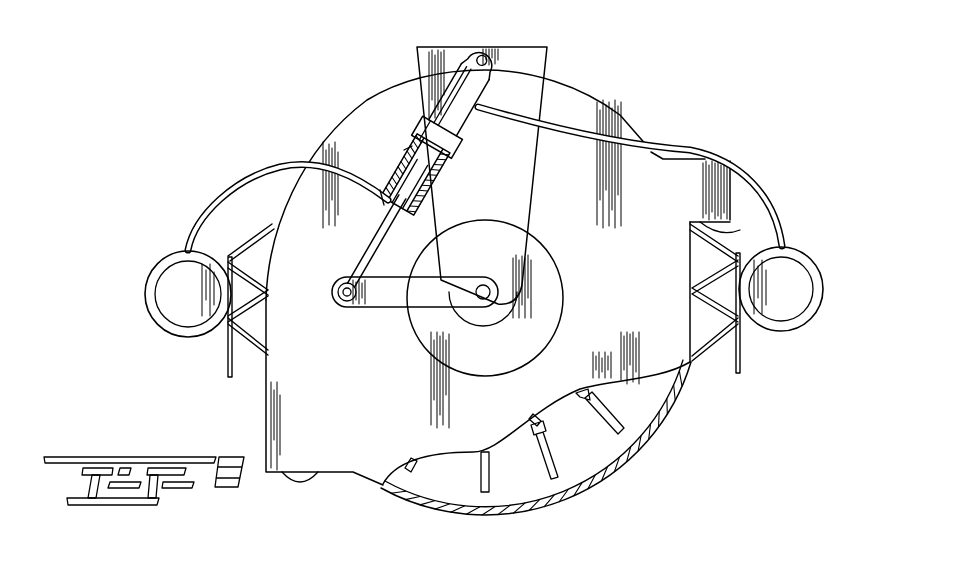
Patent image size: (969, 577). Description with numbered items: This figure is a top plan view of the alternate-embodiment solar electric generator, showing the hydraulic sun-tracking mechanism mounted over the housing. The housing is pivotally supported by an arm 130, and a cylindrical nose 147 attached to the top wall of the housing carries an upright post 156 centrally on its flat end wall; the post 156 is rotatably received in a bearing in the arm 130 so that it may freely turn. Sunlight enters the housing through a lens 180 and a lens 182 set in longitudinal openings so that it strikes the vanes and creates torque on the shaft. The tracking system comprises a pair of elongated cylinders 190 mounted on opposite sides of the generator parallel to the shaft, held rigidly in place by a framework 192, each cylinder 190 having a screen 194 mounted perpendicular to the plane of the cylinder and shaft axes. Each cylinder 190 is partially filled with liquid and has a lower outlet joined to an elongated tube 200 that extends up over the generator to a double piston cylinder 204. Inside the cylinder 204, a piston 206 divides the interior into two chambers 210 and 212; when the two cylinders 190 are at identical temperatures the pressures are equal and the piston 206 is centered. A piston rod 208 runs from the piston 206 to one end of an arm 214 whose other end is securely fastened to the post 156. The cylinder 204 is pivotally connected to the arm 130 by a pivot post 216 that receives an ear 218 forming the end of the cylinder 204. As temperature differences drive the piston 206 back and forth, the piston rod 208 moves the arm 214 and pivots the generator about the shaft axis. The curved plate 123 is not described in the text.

The curved bottom plate 123 is at (571, 498).
The arm 130 is at (530, 208).
The cylindrical nose 147 is at (566, 300).
The upright post 156 is at (470, 323).
The lens 180 is at (726, 229).
The lens 182 is at (296, 486).
The elongated cylinder 190 is at (157, 325).
The framework 192 is at (259, 232).
The screen 194 is at (229, 370).
The elongated conduit or tube 200 is at (233, 183).
The double piston cylinder 204 is at (418, 130).
The piston 206 is at (408, 155).
The piston rod 208 is at (368, 252).
The chamber 210 is at (437, 153).
The chamber 212 is at (418, 190).
The arm 214 is at (378, 308).
The pivot post 216 is at (487, 53).
The ear 218 is at (490, 76).